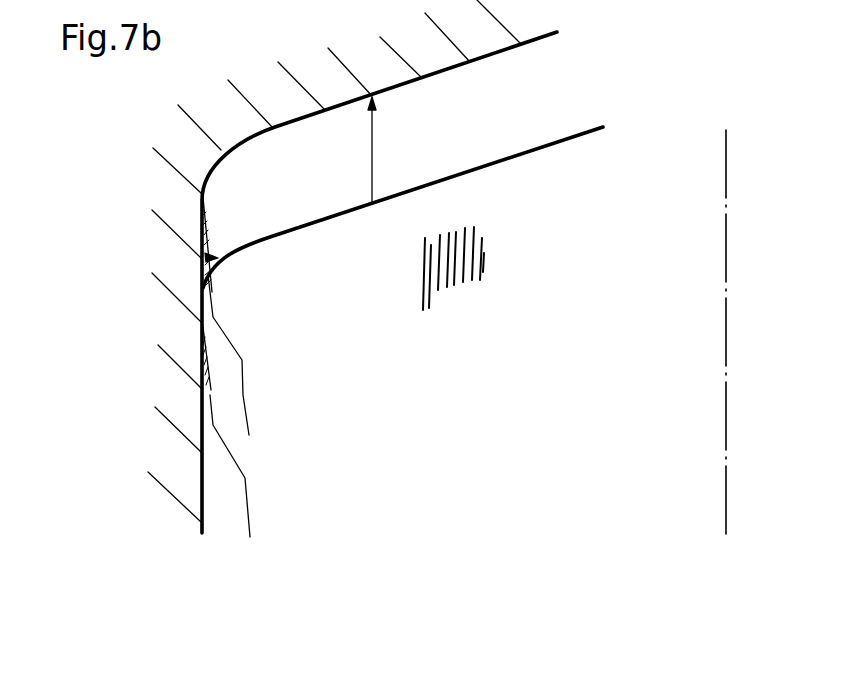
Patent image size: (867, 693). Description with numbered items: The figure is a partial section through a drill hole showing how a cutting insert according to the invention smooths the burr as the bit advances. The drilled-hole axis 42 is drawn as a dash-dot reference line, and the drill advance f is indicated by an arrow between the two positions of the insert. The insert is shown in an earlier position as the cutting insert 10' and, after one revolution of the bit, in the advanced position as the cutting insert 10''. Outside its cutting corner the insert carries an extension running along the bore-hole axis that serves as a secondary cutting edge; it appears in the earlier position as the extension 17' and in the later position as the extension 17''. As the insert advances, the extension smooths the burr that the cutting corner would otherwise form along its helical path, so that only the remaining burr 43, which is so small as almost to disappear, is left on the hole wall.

The cutting insert (position after one revolution) 10'' is at (375, 266).
The cutting insert (initial position) 10' is at (417, 268).
The remaining burr 43 is at (202, 258).
The extension (auxiliary cutting edge, later position) 17'' is at (274, 346).
The extension (auxiliary cutting edge, earlier position) 17' is at (303, 454).
The drilled-hole axis 42 is at (725, 397).
The drill advance f is at (378, 157).